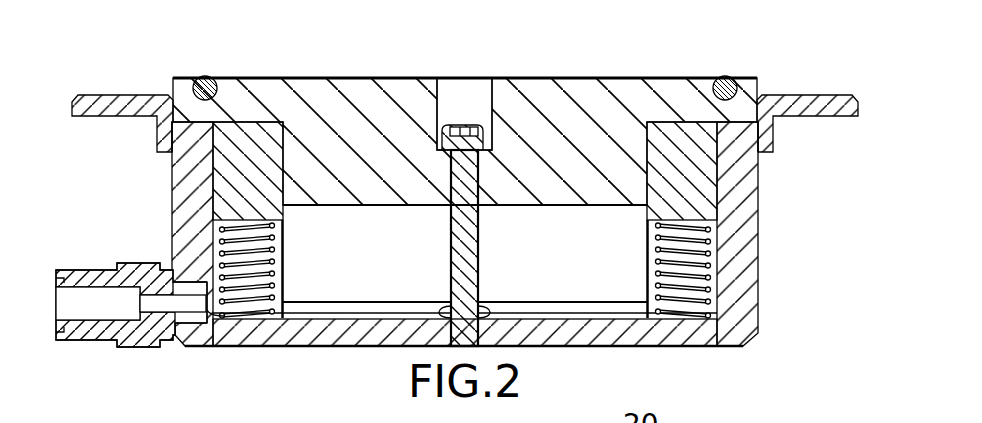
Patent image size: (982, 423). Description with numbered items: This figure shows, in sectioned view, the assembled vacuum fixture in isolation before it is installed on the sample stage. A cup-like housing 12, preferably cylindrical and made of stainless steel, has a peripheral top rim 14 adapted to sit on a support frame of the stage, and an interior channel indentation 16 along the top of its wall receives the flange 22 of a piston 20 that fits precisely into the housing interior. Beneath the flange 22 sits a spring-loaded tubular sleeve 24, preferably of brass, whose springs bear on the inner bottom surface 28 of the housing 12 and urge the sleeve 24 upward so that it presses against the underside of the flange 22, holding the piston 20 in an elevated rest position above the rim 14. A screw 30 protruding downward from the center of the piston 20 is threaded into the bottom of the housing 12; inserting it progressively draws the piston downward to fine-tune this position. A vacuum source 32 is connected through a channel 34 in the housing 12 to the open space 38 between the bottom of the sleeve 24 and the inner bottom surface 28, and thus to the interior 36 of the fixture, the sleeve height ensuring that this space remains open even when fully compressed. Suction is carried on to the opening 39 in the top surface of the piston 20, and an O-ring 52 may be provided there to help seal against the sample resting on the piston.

The housing 12 is at (762, 286).
The peripheral top rim 14 is at (115, 105).
The interior channel indentation 16 is at (188, 130).
The piston 20 is at (465, 102).
The flange 22 is at (263, 97).
The spring-loaded tubular sleeve 24 is at (287, 217).
The inner bottom surface 28 is at (556, 315).
The screw 30 is at (470, 243).
The vacuum source 32 is at (80, 303).
The channel 34 is at (213, 320).
The interior 36 is at (428, 276).
The open space 38 is at (327, 312).
The opening 39 is at (457, 98).
The O-ring 52 is at (207, 78).